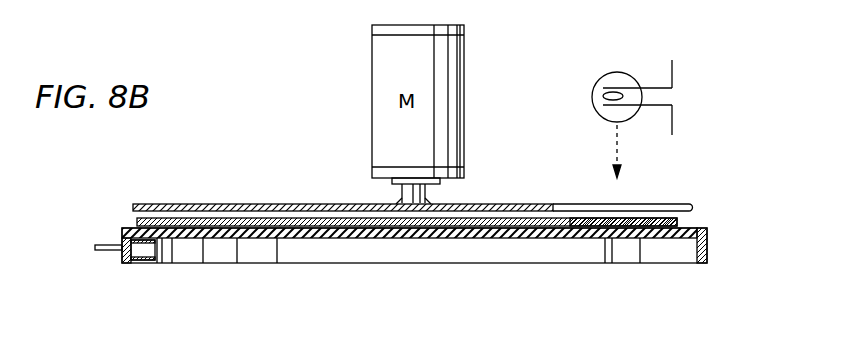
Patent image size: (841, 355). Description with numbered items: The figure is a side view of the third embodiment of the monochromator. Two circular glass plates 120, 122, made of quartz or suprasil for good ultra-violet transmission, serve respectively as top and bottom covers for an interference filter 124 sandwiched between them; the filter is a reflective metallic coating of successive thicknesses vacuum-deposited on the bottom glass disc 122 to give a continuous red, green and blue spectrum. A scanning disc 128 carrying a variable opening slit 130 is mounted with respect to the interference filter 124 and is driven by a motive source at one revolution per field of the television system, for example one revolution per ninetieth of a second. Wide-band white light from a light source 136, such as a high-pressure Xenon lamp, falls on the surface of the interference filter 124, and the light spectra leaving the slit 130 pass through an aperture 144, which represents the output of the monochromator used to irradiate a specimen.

The circular glass plate 120 is at (678, 221).
The circular glass plate 122 is at (707, 250).
The interference filter 124 is at (640, 228).
The scanning disc 128 is at (537, 207).
The variable opening slit 130 is at (618, 206).
The light source 136 is at (619, 72).
The aperture 144 is at (608, 247).